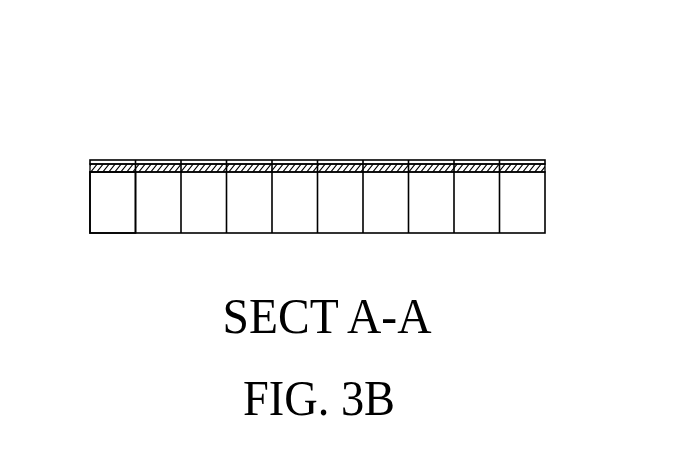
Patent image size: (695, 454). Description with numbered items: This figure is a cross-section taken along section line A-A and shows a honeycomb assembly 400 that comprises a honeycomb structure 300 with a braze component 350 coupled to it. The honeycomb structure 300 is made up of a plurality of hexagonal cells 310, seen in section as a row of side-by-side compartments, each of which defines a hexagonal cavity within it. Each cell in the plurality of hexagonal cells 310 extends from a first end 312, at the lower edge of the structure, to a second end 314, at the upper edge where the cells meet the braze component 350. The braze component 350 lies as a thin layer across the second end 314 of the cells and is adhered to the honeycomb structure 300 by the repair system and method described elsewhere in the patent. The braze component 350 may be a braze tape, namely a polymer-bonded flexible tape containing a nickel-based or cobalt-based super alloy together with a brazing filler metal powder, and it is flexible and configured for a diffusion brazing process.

The honeycomb assembly 400 is at (125, 110).
The honeycomb structure 300 is at (358, 211).
The plurality of hexagonal cells 310 is at (111, 220).
The first end 312 is at (181, 235).
The second end 314 is at (214, 159).
The braze component 350 is at (99, 170).